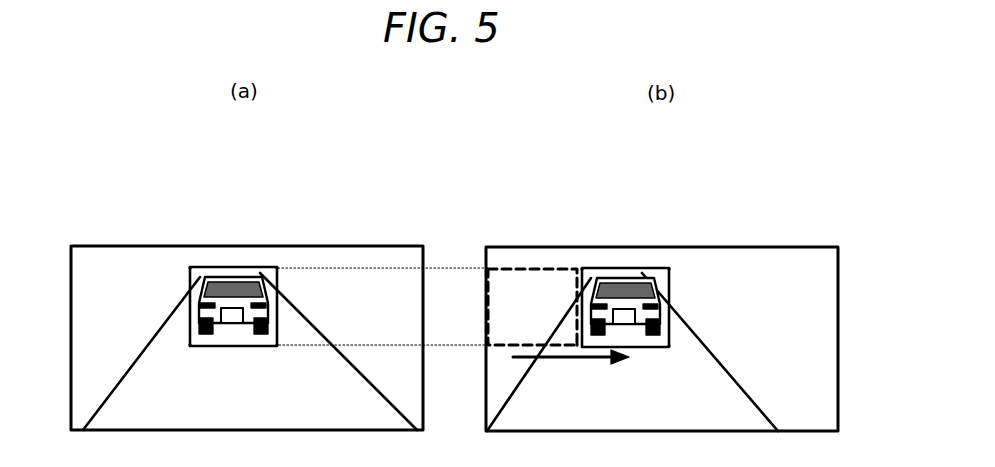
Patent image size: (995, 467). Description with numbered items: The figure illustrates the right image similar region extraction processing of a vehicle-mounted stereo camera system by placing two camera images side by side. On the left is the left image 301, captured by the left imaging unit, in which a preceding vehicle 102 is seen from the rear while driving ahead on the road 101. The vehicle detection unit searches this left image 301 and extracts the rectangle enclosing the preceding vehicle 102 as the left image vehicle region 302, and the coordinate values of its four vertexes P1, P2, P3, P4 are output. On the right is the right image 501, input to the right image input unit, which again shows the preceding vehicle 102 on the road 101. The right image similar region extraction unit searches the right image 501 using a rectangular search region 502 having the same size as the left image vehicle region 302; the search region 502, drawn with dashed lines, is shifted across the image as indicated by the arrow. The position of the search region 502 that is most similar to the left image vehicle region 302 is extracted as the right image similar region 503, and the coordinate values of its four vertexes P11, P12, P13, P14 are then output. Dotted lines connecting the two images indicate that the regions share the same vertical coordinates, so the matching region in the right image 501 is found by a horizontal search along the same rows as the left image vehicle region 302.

The road 101 is at (343, 387).
The preceding vehicle 102 is at (266, 299).
The left image 301 is at (380, 246).
The left image vehicle region 302 is at (240, 268).
The vertex of left image vehicle region P1 is at (188, 270).
The vertex of left image vehicle region P2 is at (278, 268).
The vertex of left image vehicle region P3 is at (190, 343).
The vertex of left image vehicle region P4 is at (280, 343).
The right image 501 is at (790, 247).
The search region 502 is at (509, 267).
The right image similar region 503 is at (630, 269).
The vertex of right image similar region P11 is at (580, 300).
The vertex of right image similar region P12 is at (670, 269).
The vertex of right image similar region P13 is at (579, 347).
The vertex of right image similar region P14 is at (670, 345).